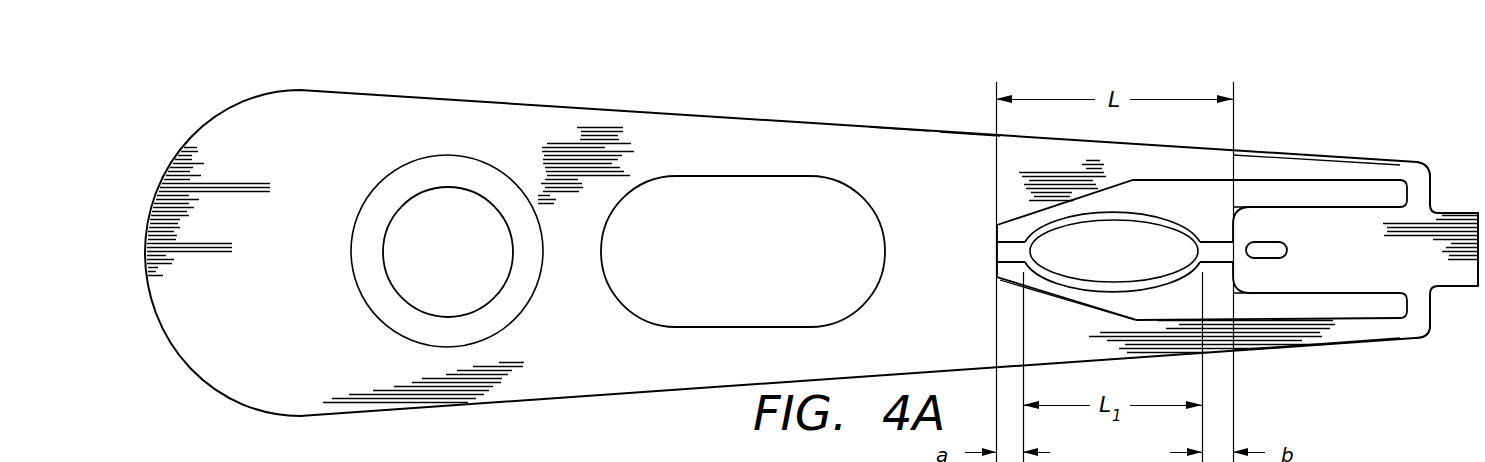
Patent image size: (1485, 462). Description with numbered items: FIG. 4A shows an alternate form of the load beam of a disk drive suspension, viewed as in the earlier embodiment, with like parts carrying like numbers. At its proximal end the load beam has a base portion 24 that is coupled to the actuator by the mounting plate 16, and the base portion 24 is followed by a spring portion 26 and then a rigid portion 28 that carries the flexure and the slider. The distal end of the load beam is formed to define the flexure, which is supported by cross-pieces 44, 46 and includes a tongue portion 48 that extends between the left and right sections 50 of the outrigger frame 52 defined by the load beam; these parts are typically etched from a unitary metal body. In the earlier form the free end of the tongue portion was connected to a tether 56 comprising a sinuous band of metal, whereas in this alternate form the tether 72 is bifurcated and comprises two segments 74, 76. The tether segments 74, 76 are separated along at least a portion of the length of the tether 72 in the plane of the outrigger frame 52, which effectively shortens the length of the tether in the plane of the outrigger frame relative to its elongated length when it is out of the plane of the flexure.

The mounting plate 16 is at (431, 160).
The base portion 24 is at (278, 108).
The spring portion 26 is at (673, 133).
The rigid portion 28 is at (948, 142).
The cross-piece 44 is at (1420, 177).
The cross-piece 46 is at (1418, 318).
The tongue portion 48 is at (1316, 250).
The left and right sections 50 is at (1287, 168).
The outrigger frame 52 is at (1208, 137).
The tether 56 is at (900, 140).
The tether 72 is at (1093, 298).
The tether segment 74 is at (1141, 214).
The tether segment 76 is at (1153, 285).